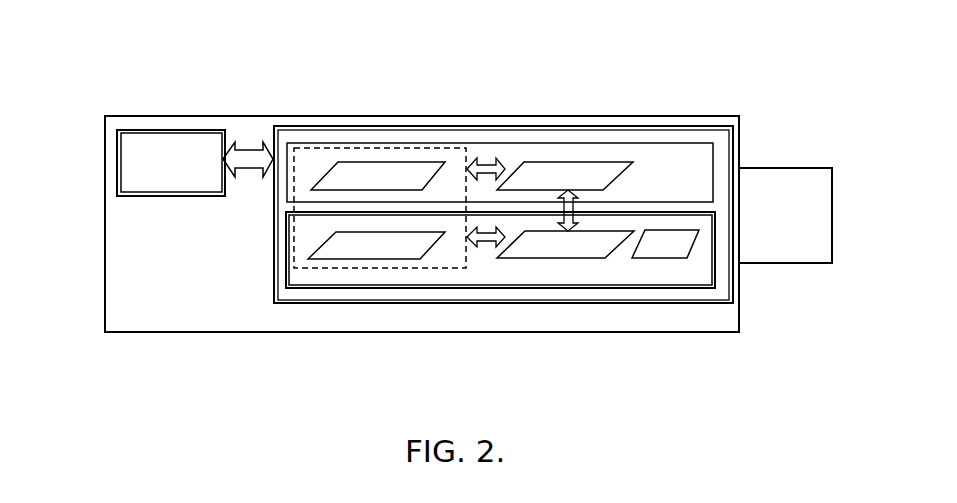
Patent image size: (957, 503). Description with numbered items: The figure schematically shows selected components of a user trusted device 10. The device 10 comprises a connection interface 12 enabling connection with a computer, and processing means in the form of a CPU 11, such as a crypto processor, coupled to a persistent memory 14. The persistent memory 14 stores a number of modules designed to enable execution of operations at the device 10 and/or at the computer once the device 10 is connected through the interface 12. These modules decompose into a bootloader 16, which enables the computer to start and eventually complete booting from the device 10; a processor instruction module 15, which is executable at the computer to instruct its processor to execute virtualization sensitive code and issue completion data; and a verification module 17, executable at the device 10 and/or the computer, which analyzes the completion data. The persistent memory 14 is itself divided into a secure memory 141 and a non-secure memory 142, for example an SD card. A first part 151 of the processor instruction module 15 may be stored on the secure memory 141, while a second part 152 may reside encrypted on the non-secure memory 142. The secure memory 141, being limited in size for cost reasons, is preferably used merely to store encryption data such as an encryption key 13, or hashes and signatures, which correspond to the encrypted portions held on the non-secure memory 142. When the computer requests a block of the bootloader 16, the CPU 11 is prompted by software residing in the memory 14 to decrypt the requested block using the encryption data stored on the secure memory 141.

The user trusted device 10 is at (167, 320).
The CPU 11 is at (127, 128).
The connection interface 12 is at (822, 168).
The encryption key 13 is at (700, 242).
The persistent memory 14 is at (323, 126).
The secure memory 141 is at (635, 288).
The non-secure memory 142 is at (661, 143).
The processor instruction module 15 is at (445, 268).
The first part of the PIM 151 is at (362, 259).
The second part of the PIM 152 is at (430, 162).
The bootloader 16 is at (553, 162).
The verification module 17 is at (582, 258).